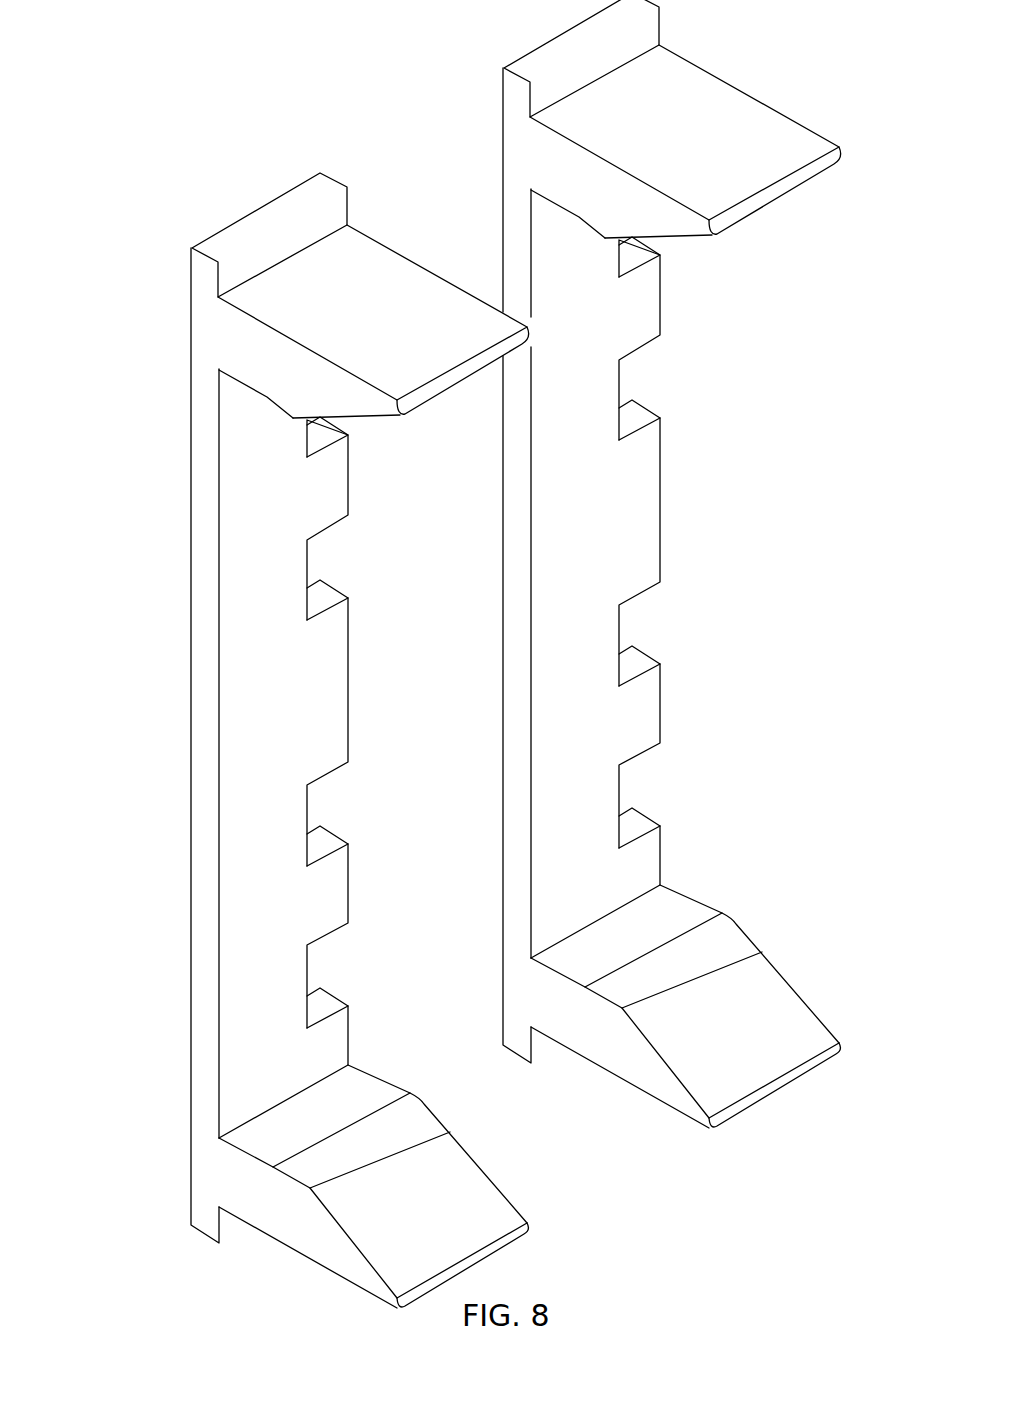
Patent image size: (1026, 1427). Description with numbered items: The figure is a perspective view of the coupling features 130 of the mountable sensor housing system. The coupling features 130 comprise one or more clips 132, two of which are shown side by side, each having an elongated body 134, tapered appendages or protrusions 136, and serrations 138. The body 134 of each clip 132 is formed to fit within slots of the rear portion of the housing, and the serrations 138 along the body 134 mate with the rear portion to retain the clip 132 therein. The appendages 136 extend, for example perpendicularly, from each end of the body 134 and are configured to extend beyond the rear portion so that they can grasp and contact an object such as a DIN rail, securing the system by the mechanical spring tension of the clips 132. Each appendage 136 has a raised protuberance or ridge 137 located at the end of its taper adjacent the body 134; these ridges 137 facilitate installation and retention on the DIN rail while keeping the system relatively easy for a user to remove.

The coupling features 130 is at (137, 35).
The clip 132 is at (467, 55).
The body 134 is at (191, 952).
The tapered appendage 136 is at (363, 234).
The ridge 137 is at (293, 418).
The serrations 138 is at (388, 605).